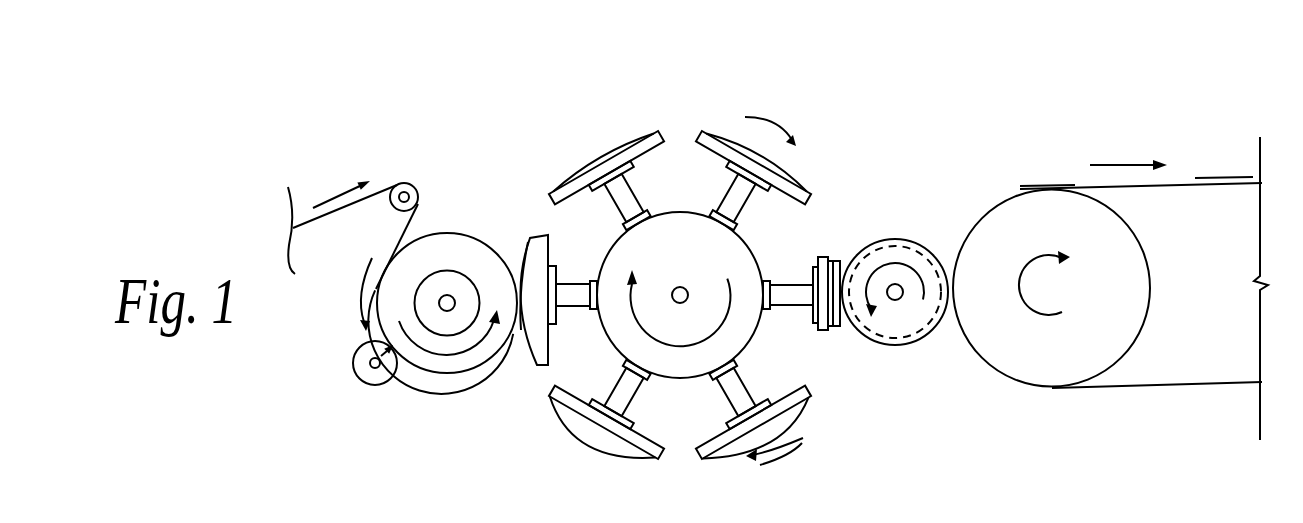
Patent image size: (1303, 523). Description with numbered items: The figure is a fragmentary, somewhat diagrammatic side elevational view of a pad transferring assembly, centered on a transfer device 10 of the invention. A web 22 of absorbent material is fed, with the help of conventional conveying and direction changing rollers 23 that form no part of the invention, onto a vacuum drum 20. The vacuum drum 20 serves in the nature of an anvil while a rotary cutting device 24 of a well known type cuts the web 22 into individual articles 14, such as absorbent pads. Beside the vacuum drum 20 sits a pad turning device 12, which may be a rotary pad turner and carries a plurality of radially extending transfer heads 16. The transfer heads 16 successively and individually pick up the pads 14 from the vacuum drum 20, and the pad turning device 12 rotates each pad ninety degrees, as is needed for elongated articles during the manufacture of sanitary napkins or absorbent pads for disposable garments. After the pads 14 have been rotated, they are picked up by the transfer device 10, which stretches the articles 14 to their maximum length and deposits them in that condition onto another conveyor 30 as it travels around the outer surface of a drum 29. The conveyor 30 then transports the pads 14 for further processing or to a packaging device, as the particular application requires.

The transfer device 10 is at (906, 180).
The pad turning device 12 is at (666, 264).
The articles 14 is at (740, 130).
The transfer heads 16 is at (822, 257).
The vacuum drum 20 is at (453, 250).
The web 22 is at (396, 242).
The rollers 23 is at (413, 185).
The rotary cutting device 24 is at (375, 363).
The drum 29 is at (1073, 299).
The conveyor 30 is at (1137, 186).